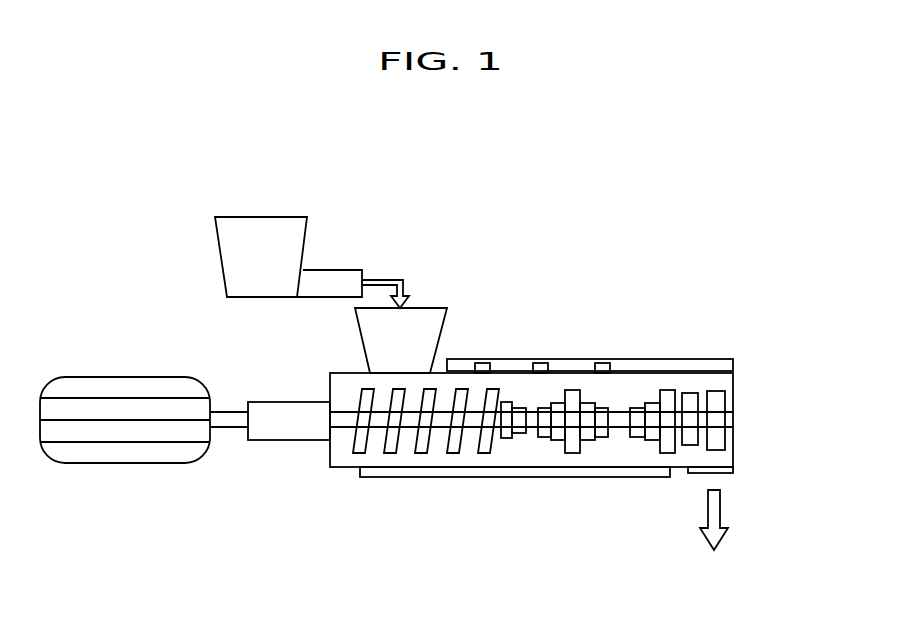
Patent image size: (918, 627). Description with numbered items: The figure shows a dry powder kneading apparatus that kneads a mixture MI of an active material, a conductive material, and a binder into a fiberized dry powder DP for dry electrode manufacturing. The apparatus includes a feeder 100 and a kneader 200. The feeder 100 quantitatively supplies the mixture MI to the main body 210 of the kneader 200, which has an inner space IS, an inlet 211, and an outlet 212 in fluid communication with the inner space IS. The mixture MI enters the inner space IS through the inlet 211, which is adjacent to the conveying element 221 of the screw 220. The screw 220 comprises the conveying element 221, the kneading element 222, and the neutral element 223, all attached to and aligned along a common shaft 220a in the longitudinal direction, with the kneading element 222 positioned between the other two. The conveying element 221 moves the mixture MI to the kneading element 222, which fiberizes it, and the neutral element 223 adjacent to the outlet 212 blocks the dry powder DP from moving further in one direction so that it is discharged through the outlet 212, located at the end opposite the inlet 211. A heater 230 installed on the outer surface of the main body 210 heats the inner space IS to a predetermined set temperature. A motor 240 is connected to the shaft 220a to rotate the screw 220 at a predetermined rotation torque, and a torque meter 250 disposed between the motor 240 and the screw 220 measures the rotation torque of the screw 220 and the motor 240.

The feeder 100 is at (292, 227).
The mixture MI is at (390, 279).
The kneader 200 is at (567, 428).
The main body 210 is at (582, 396).
The inlet 211 is at (430, 316).
The outlet 212 is at (733, 472).
The screw 220 is at (516, 464).
The shaft 220a is at (343, 420).
The conveying element 221 is at (438, 435).
The kneading element 222 is at (555, 440).
The neutral element 223 is at (688, 440).
The heater 230 is at (633, 358).
The motor 240 is at (168, 442).
The torque meter 250 is at (280, 427).
The inner space IS is at (625, 451).
The dry powder DP is at (718, 535).